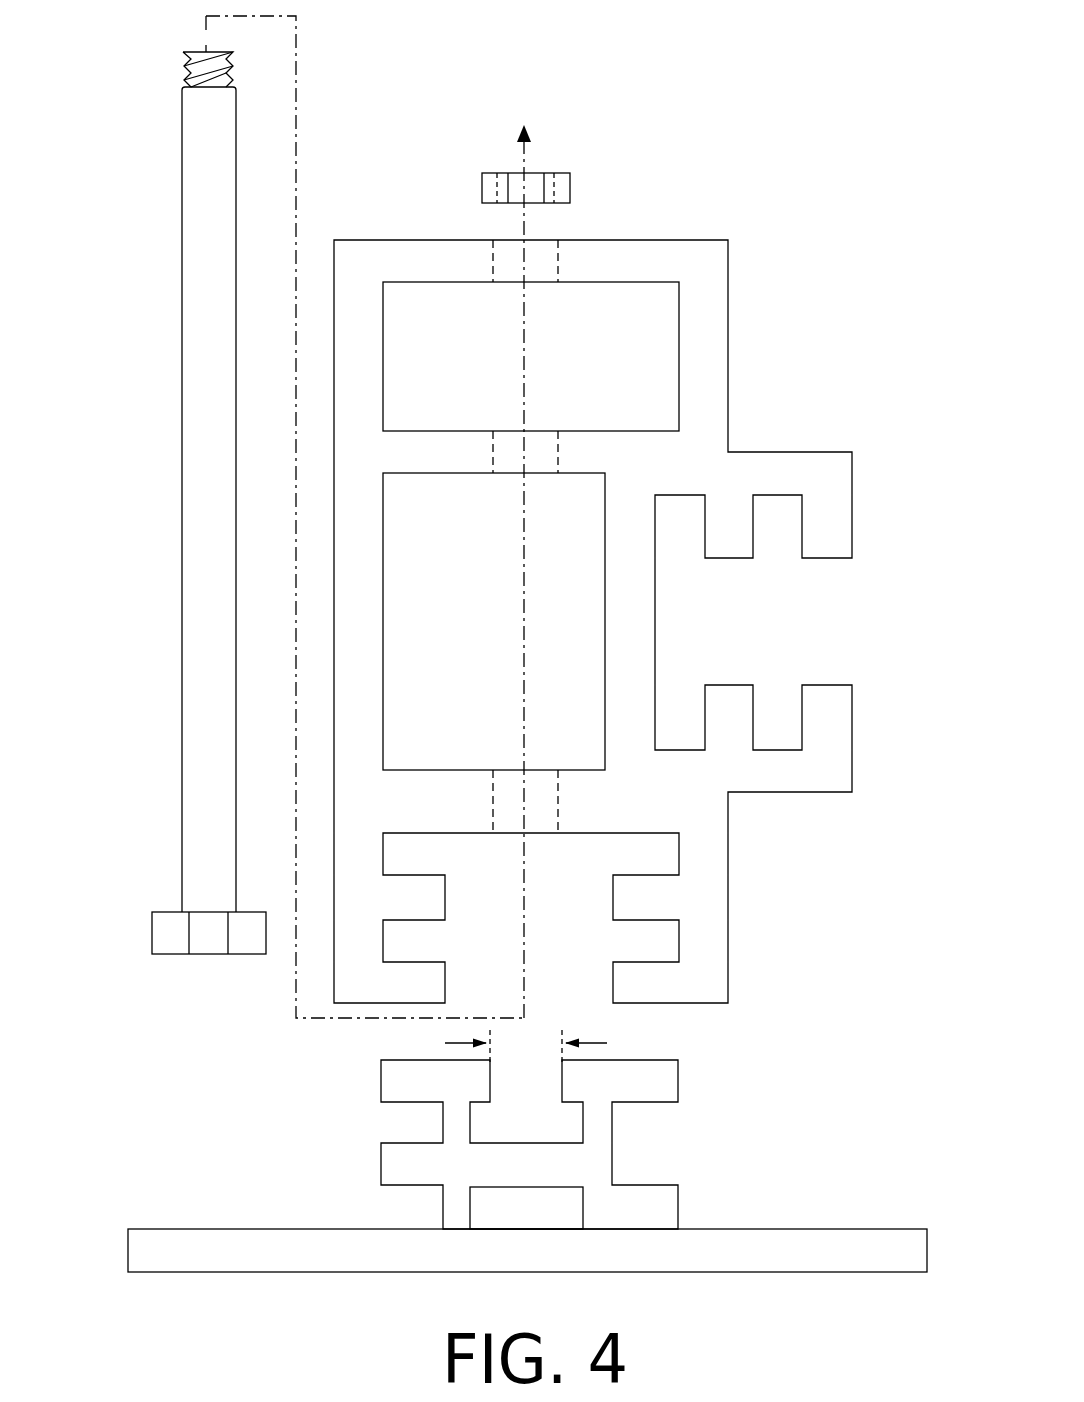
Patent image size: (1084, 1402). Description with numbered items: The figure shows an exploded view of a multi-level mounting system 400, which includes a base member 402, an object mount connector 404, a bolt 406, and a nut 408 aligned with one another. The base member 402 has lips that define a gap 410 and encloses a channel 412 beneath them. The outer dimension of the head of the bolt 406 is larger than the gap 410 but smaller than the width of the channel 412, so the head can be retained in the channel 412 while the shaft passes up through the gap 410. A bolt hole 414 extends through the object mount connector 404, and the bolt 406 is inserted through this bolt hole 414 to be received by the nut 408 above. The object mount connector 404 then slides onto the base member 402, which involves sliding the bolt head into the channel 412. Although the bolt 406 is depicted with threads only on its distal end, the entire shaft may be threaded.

The multi-level mounting system 400 is at (781, 52).
The base member 402 is at (709, 1225).
The object mount connector 404 is at (729, 316).
The bolt 406 is at (182, 262).
The nut 408 is at (482, 185).
The gap 410 is at (526, 1046).
The channel 412 is at (579, 1127).
The bolt hole 414 is at (562, 237).